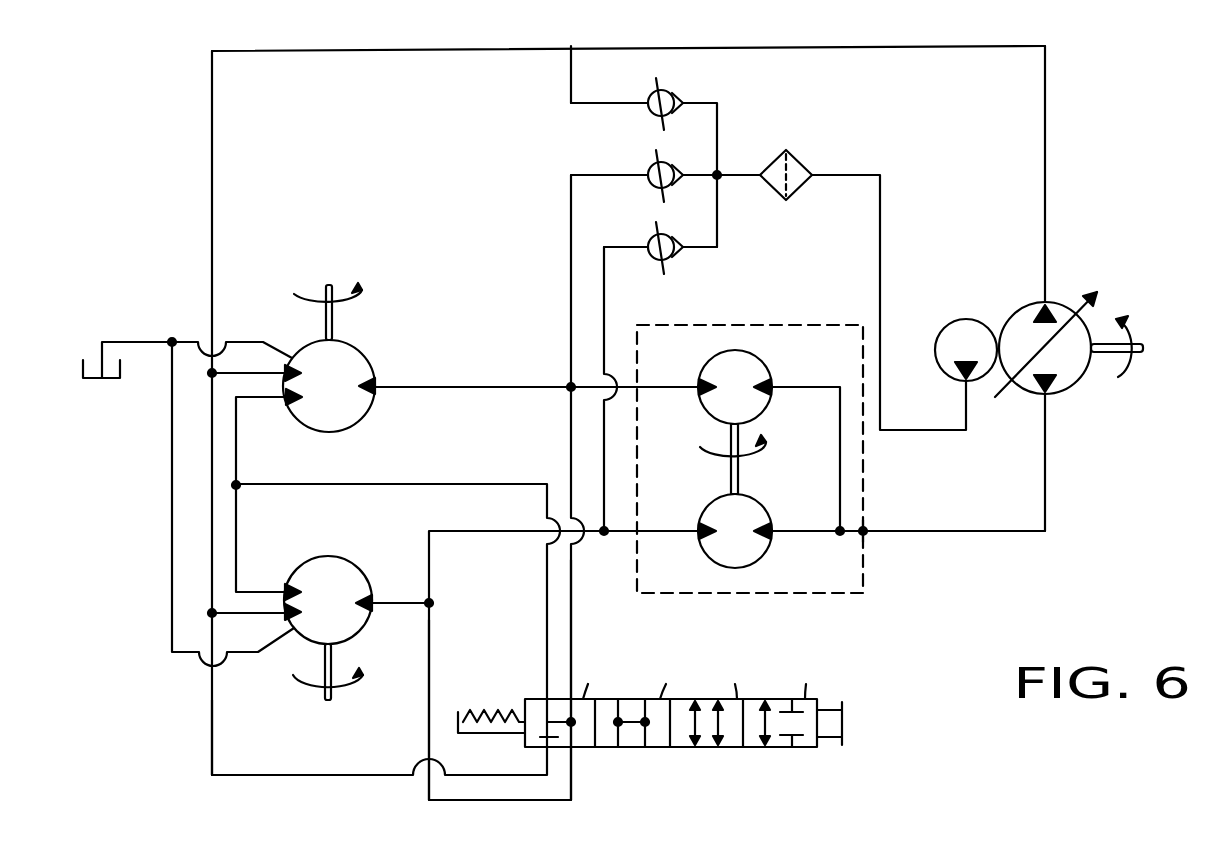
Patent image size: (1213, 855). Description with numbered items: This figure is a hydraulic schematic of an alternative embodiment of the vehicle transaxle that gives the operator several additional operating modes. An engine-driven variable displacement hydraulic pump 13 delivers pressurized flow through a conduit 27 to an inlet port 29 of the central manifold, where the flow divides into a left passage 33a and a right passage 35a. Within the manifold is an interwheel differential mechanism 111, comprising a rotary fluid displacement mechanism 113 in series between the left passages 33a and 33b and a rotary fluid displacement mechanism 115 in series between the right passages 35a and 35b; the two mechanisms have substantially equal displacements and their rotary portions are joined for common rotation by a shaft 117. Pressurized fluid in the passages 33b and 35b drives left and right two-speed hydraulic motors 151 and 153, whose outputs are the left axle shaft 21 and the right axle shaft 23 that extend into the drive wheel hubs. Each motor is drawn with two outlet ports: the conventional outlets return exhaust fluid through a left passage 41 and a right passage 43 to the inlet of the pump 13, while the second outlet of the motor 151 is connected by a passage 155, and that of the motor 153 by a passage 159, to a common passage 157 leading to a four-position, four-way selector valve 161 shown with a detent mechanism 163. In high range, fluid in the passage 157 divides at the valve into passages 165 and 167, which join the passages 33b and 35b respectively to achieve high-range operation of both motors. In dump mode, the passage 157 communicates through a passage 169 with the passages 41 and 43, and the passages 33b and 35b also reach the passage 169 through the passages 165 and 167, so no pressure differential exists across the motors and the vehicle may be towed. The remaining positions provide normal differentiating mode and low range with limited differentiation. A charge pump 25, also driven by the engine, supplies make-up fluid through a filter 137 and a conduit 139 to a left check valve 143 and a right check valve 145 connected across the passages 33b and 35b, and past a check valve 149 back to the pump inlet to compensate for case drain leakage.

The variable displacement hydraulic pump 13 is at (1025, 307).
The left axle shaft 21 is at (336, 338).
The right axle shaft 23 is at (333, 665).
The charge pump 25 is at (960, 321).
The conduit 27 is at (935, 533).
The inlet port 29 is at (866, 529).
The left passage 33a is at (795, 386).
The left passage 33b is at (478, 385).
The right passage 35a is at (817, 556).
The right passage 35b is at (460, 532).
The left passage 41 is at (250, 372).
The right passage 43 is at (243, 615).
The interwheel differential mechanism 111 is at (774, 604).
The rotary fluid displacement mechanism 113 is at (712, 362).
The rotary fluid displacement mechanism 115 is at (700, 548).
The shaft 117 is at (740, 490).
The filter 137 is at (800, 161).
The conduit 139 is at (883, 215).
The left check valve 143 is at (649, 162).
The right check valve 145 is at (650, 236).
The check valve 149 is at (668, 92).
The two-speed hydraulic motor 151 is at (358, 422).
The two-speed hydraulic motor 153 is at (337, 557).
The passage 155 is at (237, 436).
The passage 157 is at (468, 484).
The passage 159 is at (237, 562).
The four-position, four-way selector valve 161 is at (683, 762).
The detent mechanism 163 is at (468, 712).
The passage 165 is at (574, 645).
The passage 167 is at (426, 702).
The passage 169 is at (306, 773).